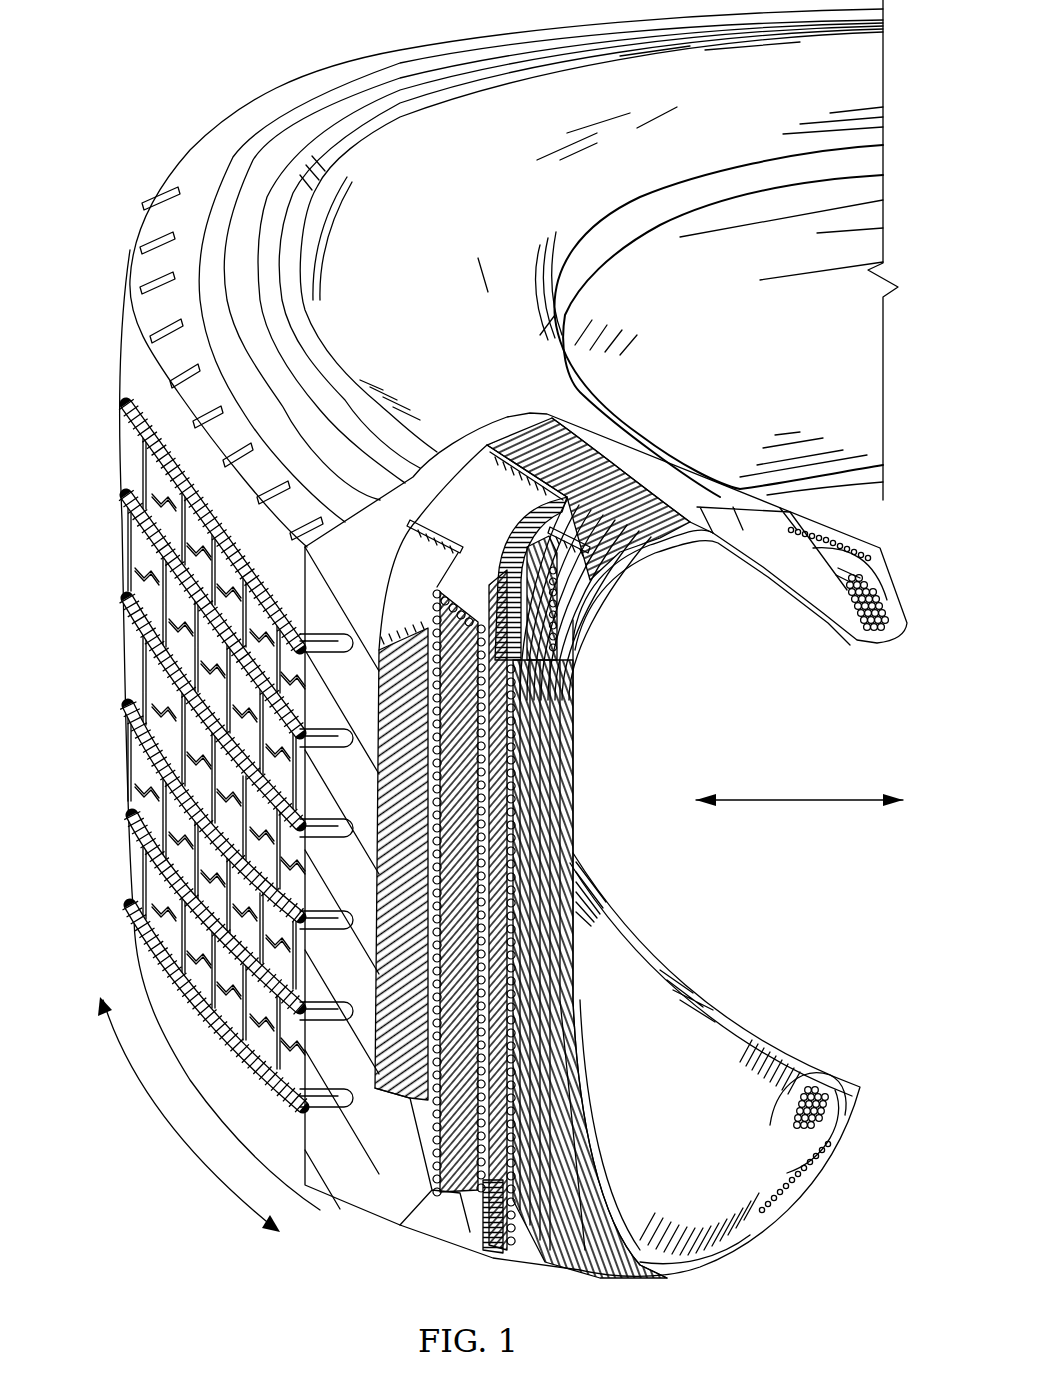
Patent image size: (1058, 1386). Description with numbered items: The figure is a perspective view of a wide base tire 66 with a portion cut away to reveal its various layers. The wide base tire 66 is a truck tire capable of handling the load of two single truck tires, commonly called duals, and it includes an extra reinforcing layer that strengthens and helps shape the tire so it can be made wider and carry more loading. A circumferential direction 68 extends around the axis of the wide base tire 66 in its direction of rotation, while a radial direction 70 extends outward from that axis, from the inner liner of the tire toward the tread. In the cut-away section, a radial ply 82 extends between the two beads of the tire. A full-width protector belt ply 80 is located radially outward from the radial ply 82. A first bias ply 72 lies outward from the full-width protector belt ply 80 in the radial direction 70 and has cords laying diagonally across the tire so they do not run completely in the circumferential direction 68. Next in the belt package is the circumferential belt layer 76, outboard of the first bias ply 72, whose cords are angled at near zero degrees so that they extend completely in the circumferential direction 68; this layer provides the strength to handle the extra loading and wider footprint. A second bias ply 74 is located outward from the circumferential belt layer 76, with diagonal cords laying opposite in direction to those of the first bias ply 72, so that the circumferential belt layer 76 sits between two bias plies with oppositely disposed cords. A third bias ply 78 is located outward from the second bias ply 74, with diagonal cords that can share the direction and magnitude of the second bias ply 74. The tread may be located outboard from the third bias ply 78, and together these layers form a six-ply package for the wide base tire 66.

The wide base tire 66 is at (104, 280).
The circumferential direction 68 is at (167, 1123).
The radial direction 70 is at (793, 800).
The first bias ply 72 is at (503, 800).
The second bias ply 74 is at (430, 910).
The circumferential belt layer 76 is at (470, 850).
The third bias ply 78 is at (393, 977).
The full-width protector belt ply 80 is at (533, 740).
The radial ply 82 is at (567, 677).